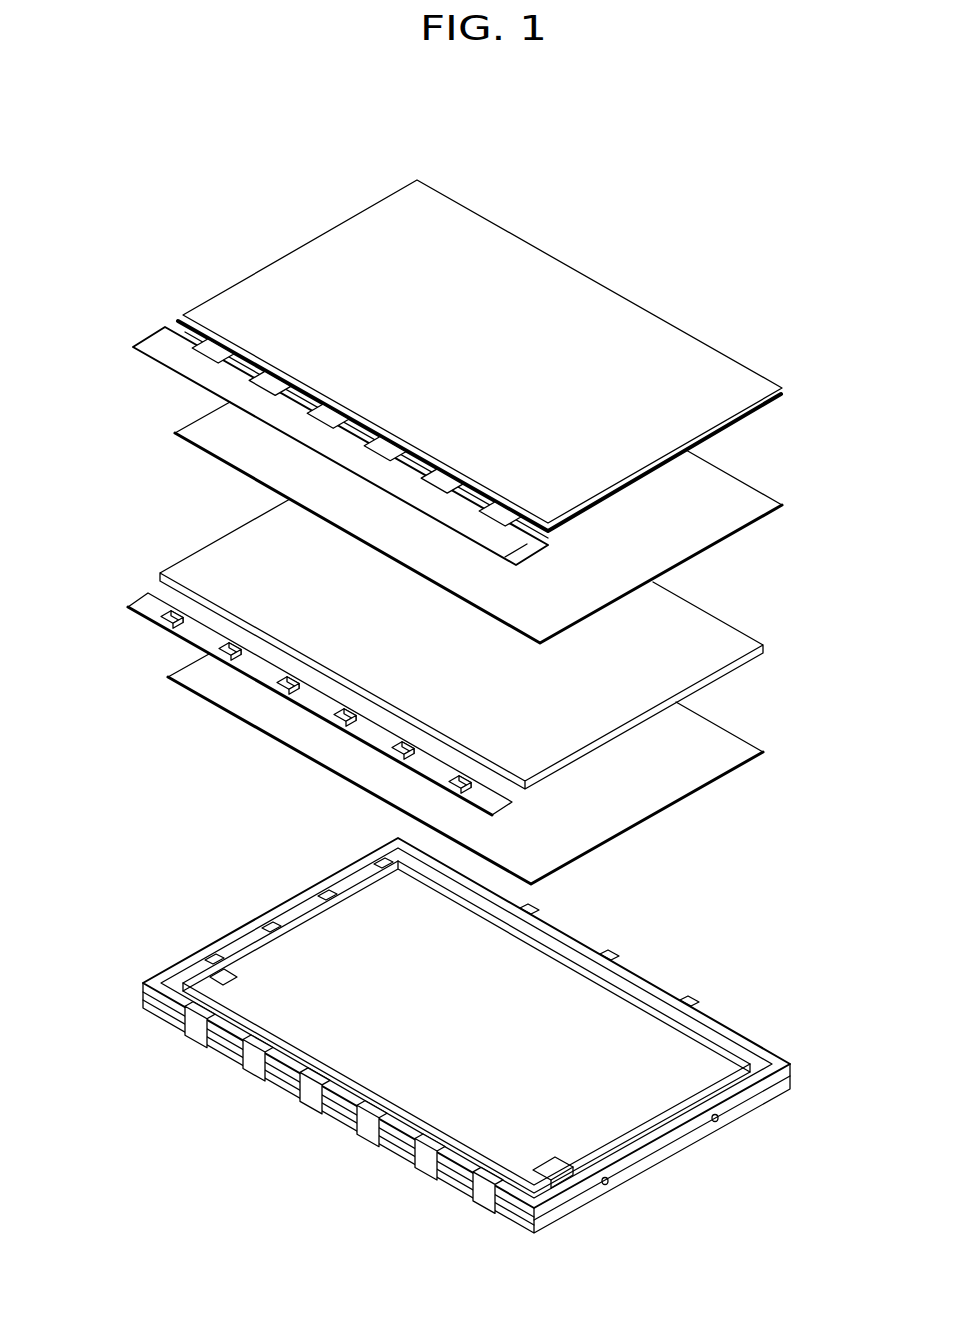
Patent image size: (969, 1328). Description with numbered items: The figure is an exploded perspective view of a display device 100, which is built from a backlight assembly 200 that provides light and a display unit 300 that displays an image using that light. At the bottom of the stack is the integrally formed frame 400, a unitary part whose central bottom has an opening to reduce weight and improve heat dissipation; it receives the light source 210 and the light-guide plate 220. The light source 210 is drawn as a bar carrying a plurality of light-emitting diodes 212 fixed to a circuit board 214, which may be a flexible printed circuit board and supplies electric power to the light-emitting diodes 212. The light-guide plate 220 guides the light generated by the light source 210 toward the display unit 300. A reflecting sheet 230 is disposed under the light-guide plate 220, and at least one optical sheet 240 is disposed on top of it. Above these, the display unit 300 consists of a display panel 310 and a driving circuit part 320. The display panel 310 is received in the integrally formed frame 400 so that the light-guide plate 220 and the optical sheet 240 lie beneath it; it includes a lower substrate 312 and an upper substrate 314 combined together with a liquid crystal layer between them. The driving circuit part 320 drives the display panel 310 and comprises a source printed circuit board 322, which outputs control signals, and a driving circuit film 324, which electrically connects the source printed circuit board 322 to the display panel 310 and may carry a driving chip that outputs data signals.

The display device 100 is at (632, 258).
The backlight assembly 200 is at (806, 1097).
The light source 210 is at (130, 596).
The light-emitting diodes 212 is at (152, 621).
The circuit board 214 is at (140, 610).
The light-guide plate 220 is at (170, 560).
The reflecting sheet 230 is at (165, 684).
The optical sheet 240 is at (163, 431).
The display unit 300 is at (183, 303).
The display panel 310 is at (849, 359).
The lower substrate 312 is at (776, 397).
The upper substrate 314 is at (773, 387).
The driving circuit part 320 is at (82, 302).
The source printed circuit board 322 is at (196, 331).
The driving circuit film 324 is at (205, 350).
The integrally formed frame 400 is at (183, 945).